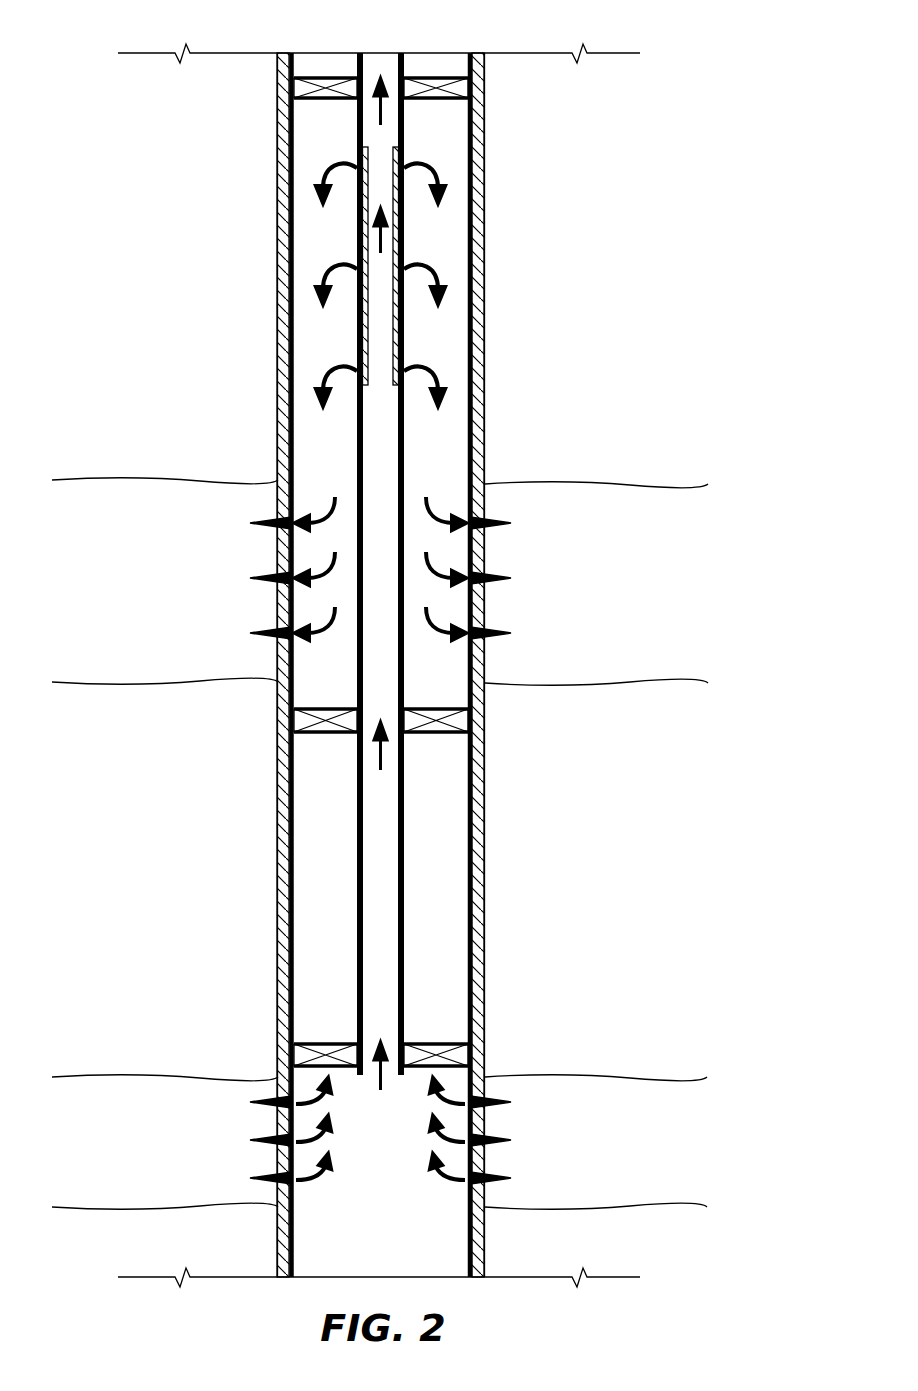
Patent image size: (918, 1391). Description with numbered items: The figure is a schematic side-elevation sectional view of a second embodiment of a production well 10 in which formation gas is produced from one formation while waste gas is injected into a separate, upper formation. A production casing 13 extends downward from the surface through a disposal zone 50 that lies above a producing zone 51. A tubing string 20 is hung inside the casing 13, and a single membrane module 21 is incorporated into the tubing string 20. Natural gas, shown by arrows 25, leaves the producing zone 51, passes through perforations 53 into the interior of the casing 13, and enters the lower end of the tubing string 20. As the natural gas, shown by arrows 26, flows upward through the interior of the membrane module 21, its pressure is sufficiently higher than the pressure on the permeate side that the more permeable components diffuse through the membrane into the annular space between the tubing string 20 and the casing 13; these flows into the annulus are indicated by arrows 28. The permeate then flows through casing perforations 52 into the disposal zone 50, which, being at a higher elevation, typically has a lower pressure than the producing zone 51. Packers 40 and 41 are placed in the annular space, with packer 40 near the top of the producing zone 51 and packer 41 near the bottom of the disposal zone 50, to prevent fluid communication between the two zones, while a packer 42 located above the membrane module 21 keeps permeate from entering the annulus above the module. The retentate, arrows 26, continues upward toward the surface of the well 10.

The production well 10 is at (459, 26).
The production casing 13 is at (277, 386).
The tubing string 20 is at (405, 128).
The membrane module 21 is at (360, 220).
The natural gas from producing zone 25 is at (300, 1176).
The natural gas flowing through membrane module 26 is at (377, 115).
The flow through tubing ports 28 is at (429, 270).
The packer 40 is at (305, 1043).
The packer 41 is at (305, 733).
The packer 42 is at (447, 78).
The disposal zone 50 is at (608, 593).
The producing zone 51 is at (608, 1155).
The casing perforations 52 is at (263, 579).
The perforations 53 is at (262, 1102).